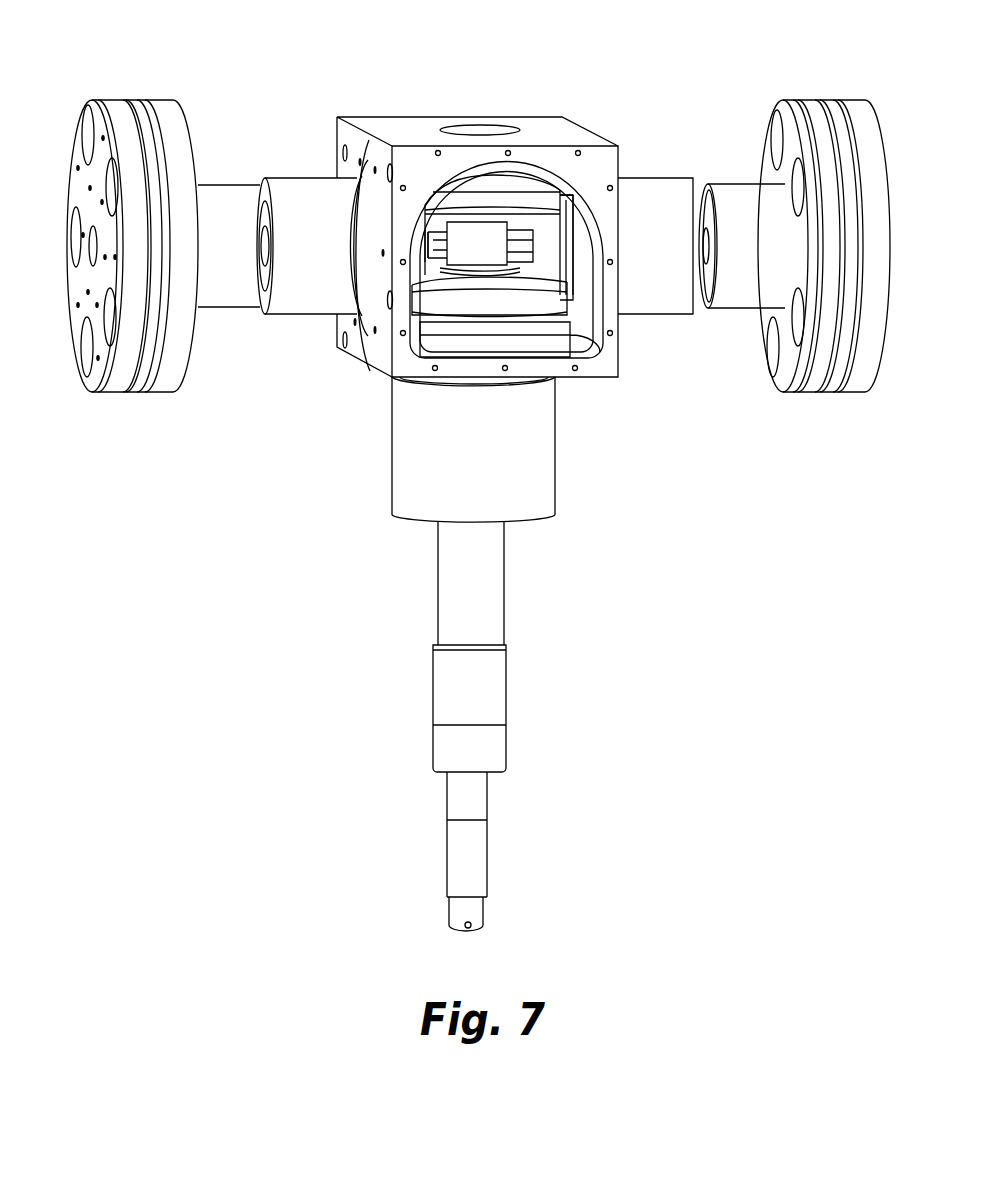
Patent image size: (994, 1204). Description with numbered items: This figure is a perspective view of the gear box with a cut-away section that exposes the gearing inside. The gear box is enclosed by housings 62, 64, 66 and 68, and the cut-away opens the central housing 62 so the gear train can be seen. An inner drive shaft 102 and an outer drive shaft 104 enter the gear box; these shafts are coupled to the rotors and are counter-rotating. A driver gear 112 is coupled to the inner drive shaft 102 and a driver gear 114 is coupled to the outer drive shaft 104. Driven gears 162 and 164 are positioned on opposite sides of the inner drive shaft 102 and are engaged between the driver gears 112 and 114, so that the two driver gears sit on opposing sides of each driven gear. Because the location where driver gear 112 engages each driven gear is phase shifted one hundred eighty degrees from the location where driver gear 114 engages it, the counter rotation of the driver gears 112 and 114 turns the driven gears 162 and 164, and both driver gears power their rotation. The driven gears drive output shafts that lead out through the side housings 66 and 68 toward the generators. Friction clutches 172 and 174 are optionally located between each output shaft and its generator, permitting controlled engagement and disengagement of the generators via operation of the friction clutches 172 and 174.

The housing 62 is at (417, 155).
The housing 64 is at (537, 465).
The housing 66 is at (672, 282).
The housing 68 is at (293, 298).
The inner drive shaft 102 is at (485, 857).
The outer drive shaft 104 is at (498, 675).
The driver gear 112 is at (488, 217).
The driver gear 114 is at (490, 288).
The driven gear 162 is at (550, 243).
The driven gear 164 is at (420, 247).
The friction clutch 172 is at (827, 100).
The friction clutch 174 is at (133, 100).